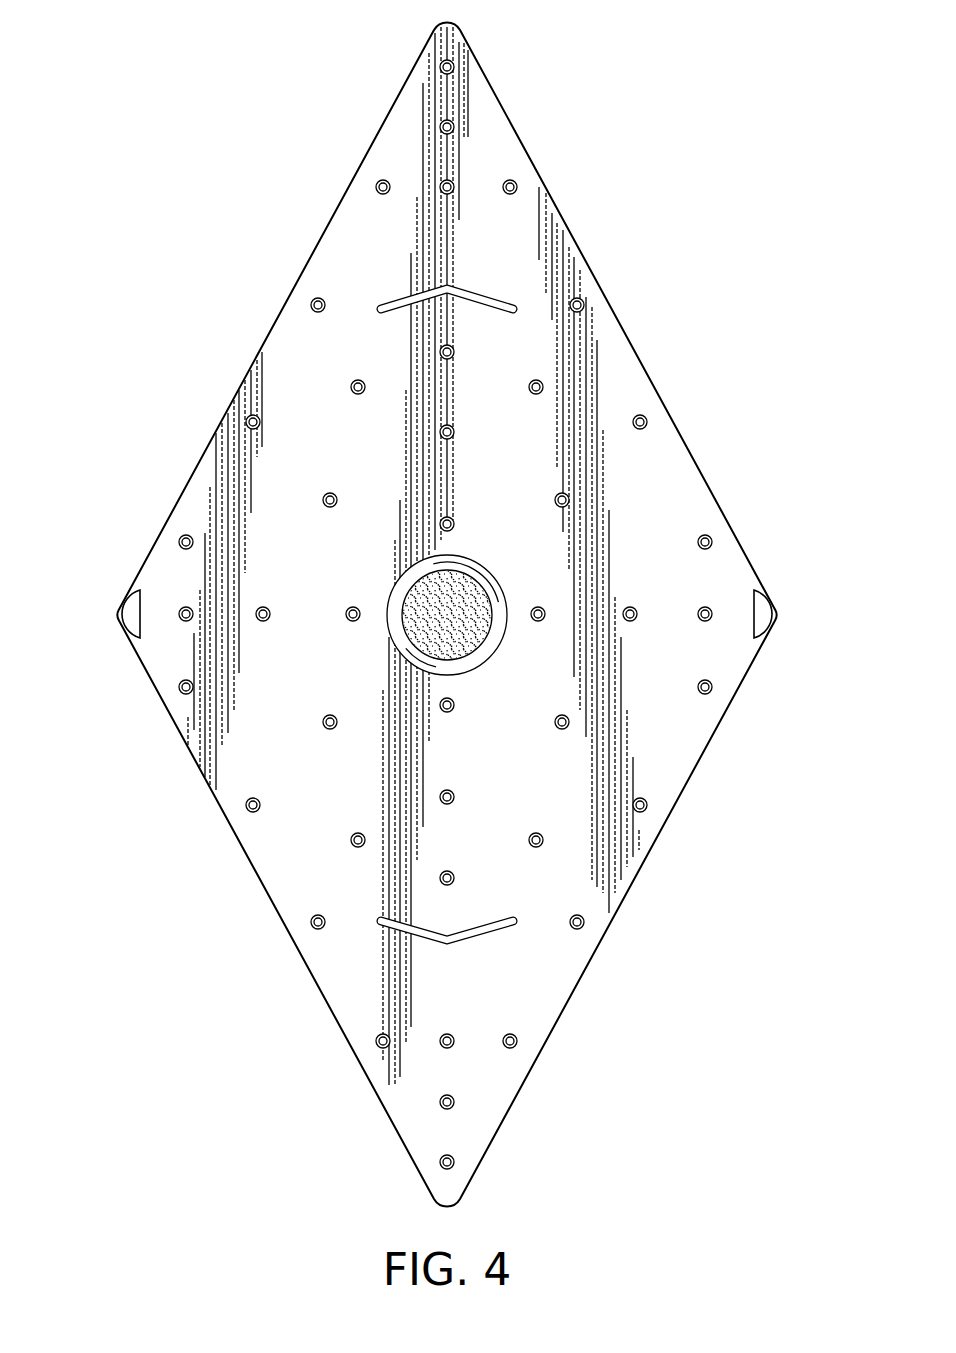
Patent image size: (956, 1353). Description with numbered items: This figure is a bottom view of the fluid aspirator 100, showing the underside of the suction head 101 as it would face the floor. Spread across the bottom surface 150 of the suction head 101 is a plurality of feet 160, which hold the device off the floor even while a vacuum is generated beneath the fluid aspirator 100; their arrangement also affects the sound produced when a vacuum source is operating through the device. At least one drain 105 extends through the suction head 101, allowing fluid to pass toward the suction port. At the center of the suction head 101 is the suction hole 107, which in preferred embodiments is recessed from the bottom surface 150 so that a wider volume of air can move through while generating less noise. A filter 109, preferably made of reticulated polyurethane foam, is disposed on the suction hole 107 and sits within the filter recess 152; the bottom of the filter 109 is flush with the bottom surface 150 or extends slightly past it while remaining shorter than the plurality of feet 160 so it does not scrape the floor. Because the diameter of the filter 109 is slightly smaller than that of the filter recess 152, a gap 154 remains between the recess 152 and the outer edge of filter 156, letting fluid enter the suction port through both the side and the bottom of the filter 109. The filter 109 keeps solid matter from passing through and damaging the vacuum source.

The fluid aspirator 100 is at (563, 146).
The drain 105 is at (476, 294).
The bottom surface 150 is at (618, 340).
The plurality of feet 160 is at (647, 420).
The filter recess 152 is at (428, 568).
The outer edge of filter 156 is at (410, 597).
The filter 109 is at (430, 638).
The suction head 101 is at (455, 606).
The gap 154 is at (498, 602).
The suction hole 107 is at (478, 656).